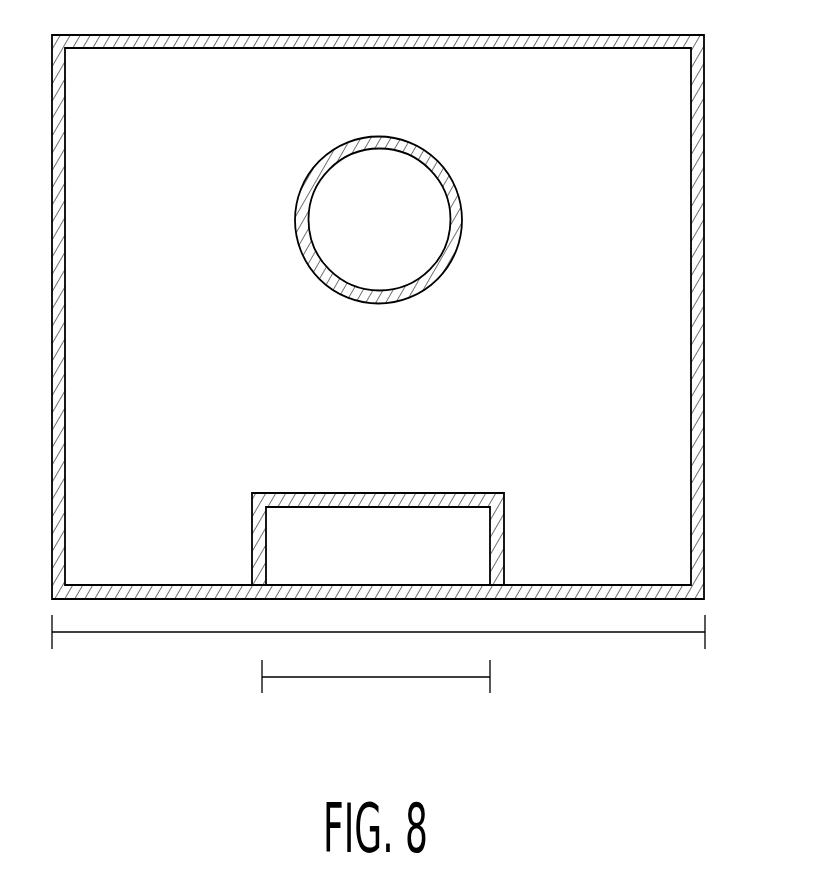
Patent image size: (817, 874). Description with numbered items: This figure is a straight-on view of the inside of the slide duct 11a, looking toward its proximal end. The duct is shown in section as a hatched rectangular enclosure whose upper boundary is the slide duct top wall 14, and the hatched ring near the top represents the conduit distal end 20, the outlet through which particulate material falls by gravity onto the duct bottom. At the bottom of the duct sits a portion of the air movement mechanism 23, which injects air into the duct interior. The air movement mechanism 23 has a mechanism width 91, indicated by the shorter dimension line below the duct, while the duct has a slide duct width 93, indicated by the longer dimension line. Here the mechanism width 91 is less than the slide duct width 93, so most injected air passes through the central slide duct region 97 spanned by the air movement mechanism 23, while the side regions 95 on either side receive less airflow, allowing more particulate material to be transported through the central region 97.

The slide duct 11a is at (705, 95).
The slide duct top wall 14 is at (380, 136).
The conduit distal end 20 is at (444, 168).
The air movement mechanism 23 is at (494, 548).
The central slide duct region 97 is at (388, 436).
The side regions 95 is at (142, 503).
The slide duct width 93 is at (652, 634).
The mechanism width 91 is at (320, 679).